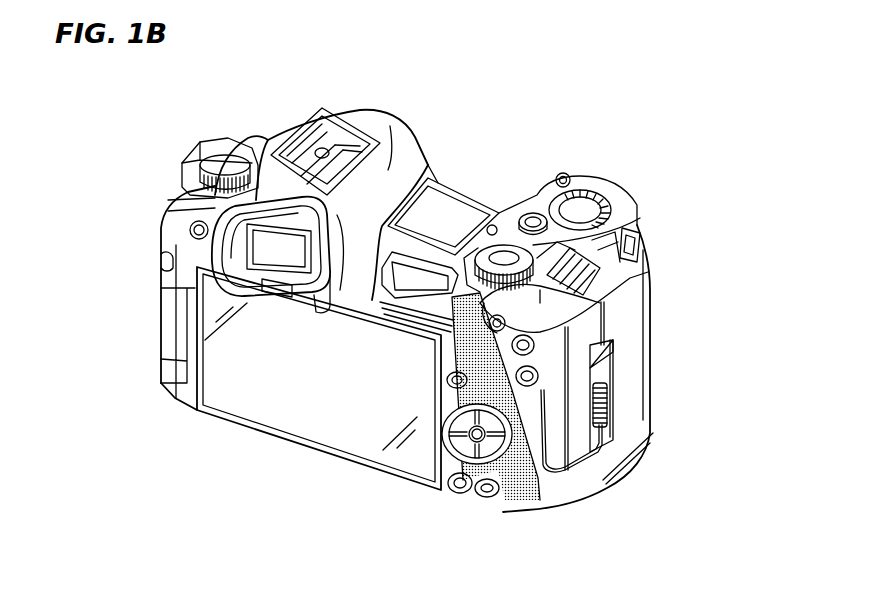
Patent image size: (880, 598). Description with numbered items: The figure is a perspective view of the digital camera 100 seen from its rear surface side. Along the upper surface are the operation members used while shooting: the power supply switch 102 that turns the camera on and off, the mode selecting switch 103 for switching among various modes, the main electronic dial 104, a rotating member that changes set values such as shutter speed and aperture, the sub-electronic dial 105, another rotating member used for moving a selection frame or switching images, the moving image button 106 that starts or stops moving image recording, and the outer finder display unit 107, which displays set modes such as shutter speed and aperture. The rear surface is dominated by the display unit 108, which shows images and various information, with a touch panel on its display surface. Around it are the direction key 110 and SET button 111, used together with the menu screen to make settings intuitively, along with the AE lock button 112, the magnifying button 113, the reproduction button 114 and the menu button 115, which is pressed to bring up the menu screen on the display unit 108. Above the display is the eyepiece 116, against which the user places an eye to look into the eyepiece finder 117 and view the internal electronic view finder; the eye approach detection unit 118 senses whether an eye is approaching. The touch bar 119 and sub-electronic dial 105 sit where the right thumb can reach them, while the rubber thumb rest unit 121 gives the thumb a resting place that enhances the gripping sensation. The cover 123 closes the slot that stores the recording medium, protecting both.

The digital camera 100 is at (642, 139).
The power supply switch 102 is at (230, 160).
The mode selecting switch 103 is at (505, 258).
The main electronic dial 104 is at (583, 198).
The sub-electronic dial 105 is at (580, 246).
The moving image button 106 is at (536, 214).
The outer finder display unit 107 is at (430, 200).
The display unit 108 is at (266, 404).
The direction key 110 is at (490, 455).
The SET button 111 is at (470, 440).
The AE lock button 112 is at (533, 345).
The magnifying button 113 is at (537, 376).
The reproduction button 114 is at (459, 490).
The menu button 115 is at (194, 232).
The eyepiece 116 is at (275, 235).
The eyepiece finder 117 is at (340, 230).
The eye approach detection unit 118 is at (262, 284).
The touch bar 119 is at (425, 283).
The thumb rest unit 121 is at (643, 290).
The cover 123 is at (580, 433).